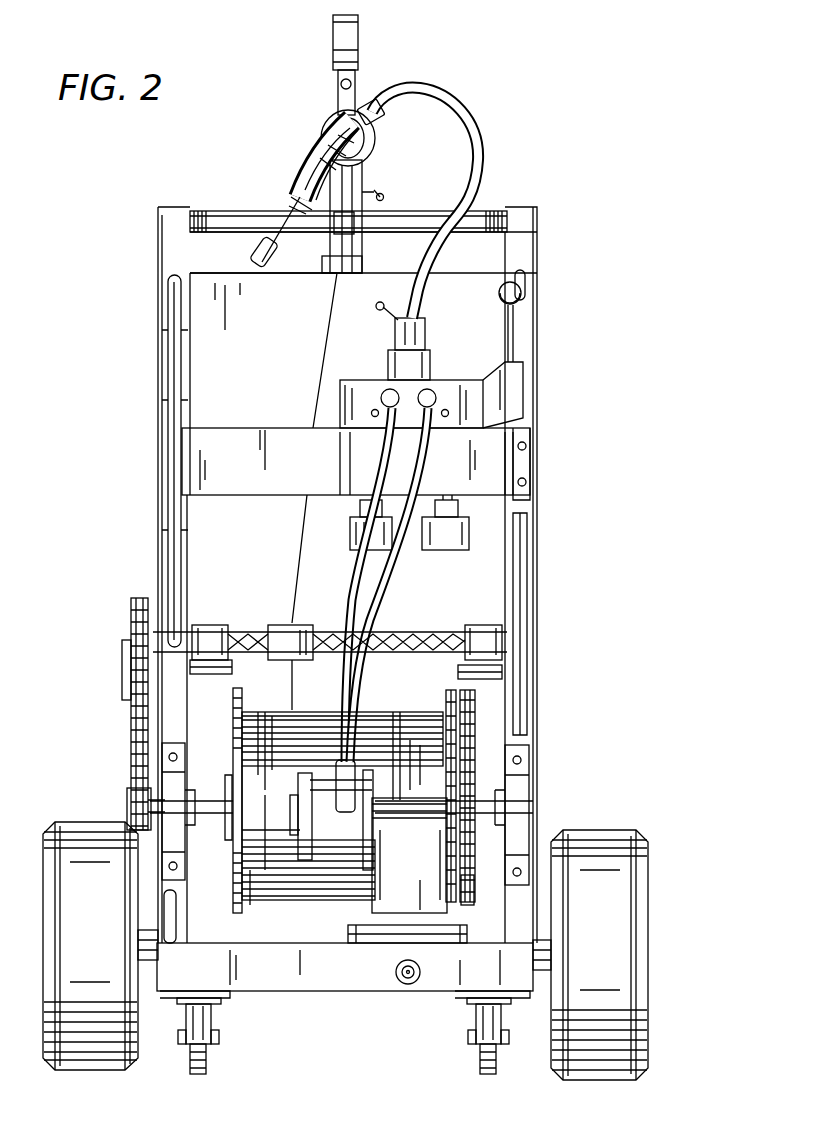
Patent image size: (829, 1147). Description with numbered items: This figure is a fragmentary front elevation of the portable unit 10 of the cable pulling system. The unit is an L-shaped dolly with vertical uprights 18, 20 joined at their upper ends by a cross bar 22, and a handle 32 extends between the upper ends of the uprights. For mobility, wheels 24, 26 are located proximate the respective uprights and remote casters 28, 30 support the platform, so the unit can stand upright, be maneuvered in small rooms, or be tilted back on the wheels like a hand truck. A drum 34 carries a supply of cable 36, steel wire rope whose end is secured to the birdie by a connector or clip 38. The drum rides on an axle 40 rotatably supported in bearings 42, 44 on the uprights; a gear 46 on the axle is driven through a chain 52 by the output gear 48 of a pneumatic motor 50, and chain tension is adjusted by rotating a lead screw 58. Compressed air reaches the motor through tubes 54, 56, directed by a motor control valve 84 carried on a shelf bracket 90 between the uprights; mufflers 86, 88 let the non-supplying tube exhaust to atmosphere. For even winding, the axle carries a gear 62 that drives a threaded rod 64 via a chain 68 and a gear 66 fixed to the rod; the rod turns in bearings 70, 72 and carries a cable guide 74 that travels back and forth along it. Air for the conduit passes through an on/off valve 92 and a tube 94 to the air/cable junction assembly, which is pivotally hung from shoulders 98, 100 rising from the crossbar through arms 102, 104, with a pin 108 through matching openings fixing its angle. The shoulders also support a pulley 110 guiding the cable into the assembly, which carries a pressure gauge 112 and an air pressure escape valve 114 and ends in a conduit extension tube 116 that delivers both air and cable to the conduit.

The portable unit 10 is at (623, 57).
The vertical upright 18 is at (540, 510).
The vertical upright 20 is at (162, 546).
The cross bar 22 is at (232, 270).
The wheel 24 is at (602, 838).
The wheel 26 is at (64, 822).
The caster 28 is at (492, 1076).
The caster 30 is at (200, 1076).
The handle 32 is at (487, 214).
The drum 34 is at (292, 898).
The cable 36 is at (284, 208).
The connector or clip 38 is at (283, 268).
The axle 40 is at (216, 828).
The bearing 42 is at (522, 788).
The bearing 44 is at (190, 788).
The gear 46 is at (462, 690).
The output gear 48 is at (466, 903).
The pneumatic motor 50 is at (406, 913).
The chain 52 is at (473, 780).
The tube 54 is at (385, 591).
The tube 56 is at (345, 586).
The lead screw 58 is at (407, 985).
The gear 62 is at (130, 800).
The rod 64 is at (188, 628).
The gear 66 is at (140, 596).
The chain 68 is at (131, 694).
The bearing 70 is at (480, 630).
The bearing 72 is at (222, 630).
The cable guide 74 is at (282, 660).
The motor control valve 84 is at (363, 395).
The muffler 86 is at (460, 548).
The muffler 88 is at (350, 541).
The shelf bracket 90 is at (300, 440).
The on/off valve 92 is at (378, 311).
The tube 94 is at (462, 118).
The shoulder 98 is at (368, 259).
The shoulder 100 is at (338, 272).
The arm 102 is at (373, 157).
The arm 104 is at (318, 160).
The pin 108 is at (383, 197).
The pulley 110 is at (333, 222).
The pressure gauge 112 is at (358, 44).
The air pressure escape valve 114 is at (338, 83).
The conduit extension tube 116 is at (292, 175).